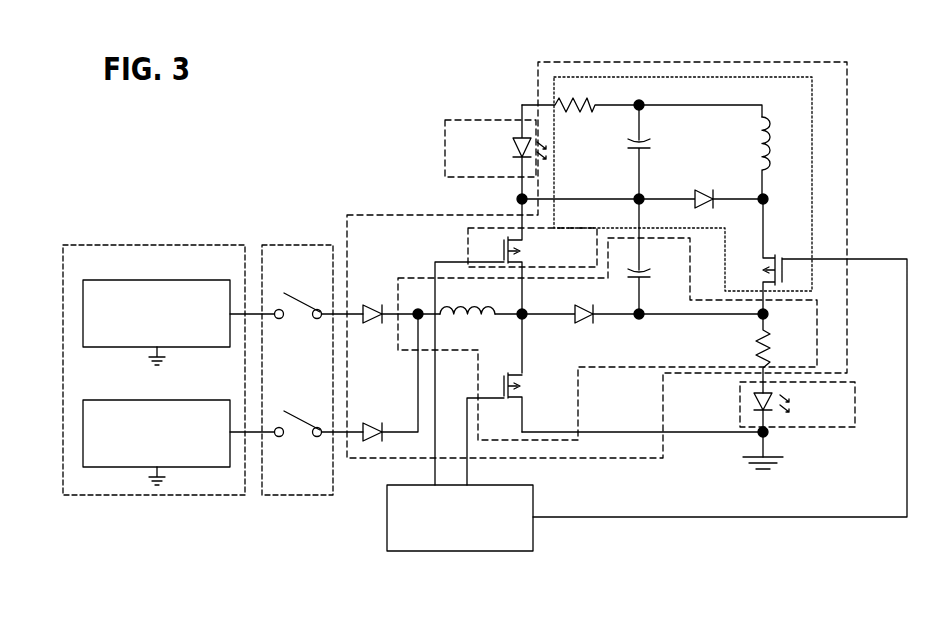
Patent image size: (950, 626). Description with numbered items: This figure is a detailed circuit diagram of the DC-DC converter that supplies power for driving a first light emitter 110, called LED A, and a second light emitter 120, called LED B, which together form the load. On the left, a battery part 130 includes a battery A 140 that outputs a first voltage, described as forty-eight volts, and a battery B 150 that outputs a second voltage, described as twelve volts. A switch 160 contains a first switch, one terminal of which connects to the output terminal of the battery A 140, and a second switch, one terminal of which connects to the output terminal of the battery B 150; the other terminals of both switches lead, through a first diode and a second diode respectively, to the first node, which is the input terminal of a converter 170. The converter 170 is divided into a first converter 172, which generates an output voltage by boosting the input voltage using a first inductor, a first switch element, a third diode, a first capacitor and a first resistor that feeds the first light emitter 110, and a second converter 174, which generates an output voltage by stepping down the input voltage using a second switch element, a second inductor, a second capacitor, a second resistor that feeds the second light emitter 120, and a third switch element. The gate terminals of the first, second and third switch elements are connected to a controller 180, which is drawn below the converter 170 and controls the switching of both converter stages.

The first light emitter 110 is at (833, 427).
The second light emitter 120 is at (492, 120).
The battery part 130 is at (165, 245).
The battery A 140 is at (83, 314).
The battery B 150 is at (83, 432).
The switch 160 is at (293, 245).
The converter 170 is at (693, 62).
The first converter 172 is at (556, 440).
The second converter 174 is at (775, 77).
The controller 180 is at (460, 553).